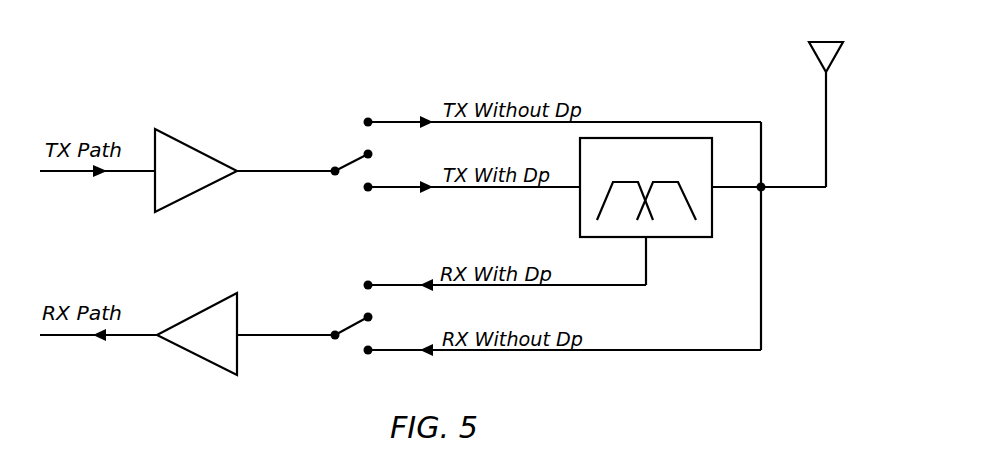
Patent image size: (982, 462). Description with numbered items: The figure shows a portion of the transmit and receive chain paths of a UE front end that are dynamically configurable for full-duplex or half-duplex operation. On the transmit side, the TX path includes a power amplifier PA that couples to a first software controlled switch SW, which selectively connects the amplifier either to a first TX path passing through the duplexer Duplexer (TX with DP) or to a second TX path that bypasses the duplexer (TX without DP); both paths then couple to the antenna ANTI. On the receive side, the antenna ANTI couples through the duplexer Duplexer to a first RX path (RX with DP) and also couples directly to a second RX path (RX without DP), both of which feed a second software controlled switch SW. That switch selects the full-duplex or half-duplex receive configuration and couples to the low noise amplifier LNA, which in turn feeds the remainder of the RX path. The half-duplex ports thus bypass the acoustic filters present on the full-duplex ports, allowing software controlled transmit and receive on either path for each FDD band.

The power amplifier PA is at (196, 170).
The low noise amplifier LNA is at (197, 334).
The duplexer Duplexer is at (646, 187).
The antenna ANTI is at (826, 101).
The software controlled switch SW is at (353, 165).